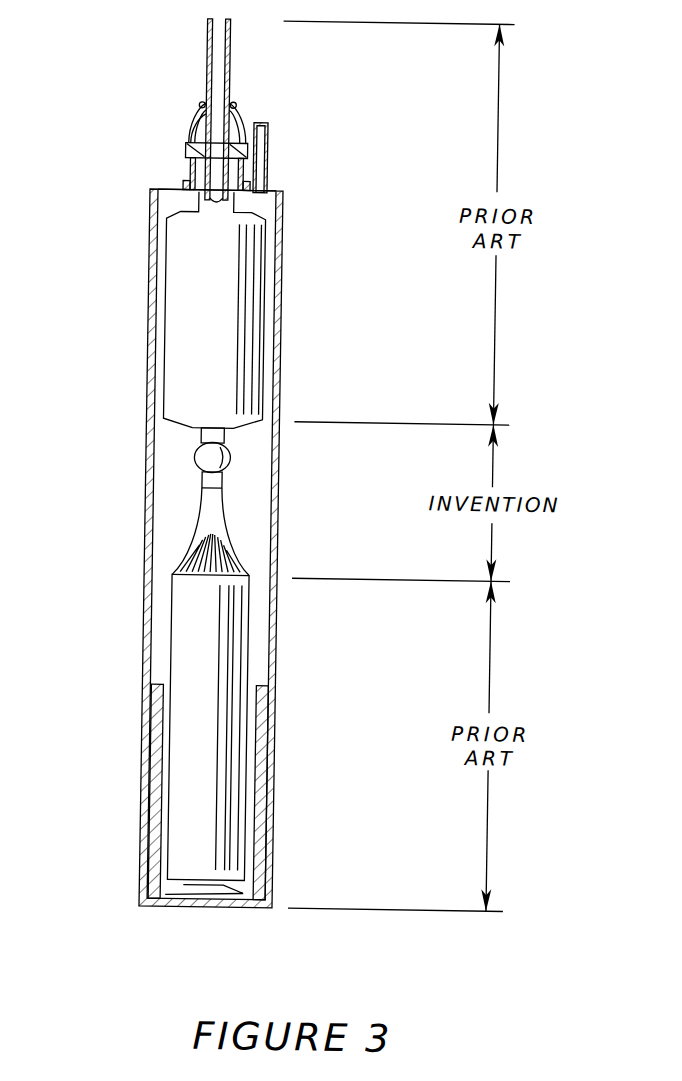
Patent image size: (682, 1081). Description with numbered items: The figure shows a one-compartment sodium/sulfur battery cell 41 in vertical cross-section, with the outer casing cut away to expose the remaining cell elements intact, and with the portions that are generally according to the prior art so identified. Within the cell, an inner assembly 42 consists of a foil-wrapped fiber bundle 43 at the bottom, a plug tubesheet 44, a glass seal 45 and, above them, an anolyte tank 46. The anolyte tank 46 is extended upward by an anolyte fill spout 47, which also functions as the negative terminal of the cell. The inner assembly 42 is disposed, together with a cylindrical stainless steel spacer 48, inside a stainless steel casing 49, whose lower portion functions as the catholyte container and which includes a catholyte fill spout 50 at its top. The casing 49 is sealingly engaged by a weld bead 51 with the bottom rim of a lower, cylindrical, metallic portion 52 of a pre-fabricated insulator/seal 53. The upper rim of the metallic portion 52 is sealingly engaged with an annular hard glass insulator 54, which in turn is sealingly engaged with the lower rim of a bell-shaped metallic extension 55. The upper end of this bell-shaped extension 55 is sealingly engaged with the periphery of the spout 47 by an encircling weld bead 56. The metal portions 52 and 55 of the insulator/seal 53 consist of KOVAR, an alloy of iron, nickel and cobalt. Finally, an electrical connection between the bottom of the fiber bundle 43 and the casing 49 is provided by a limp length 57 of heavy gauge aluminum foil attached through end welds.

The one-compartment cell 41 is at (308, 280).
The inner assembly 42 is at (241, 470).
The foil-wrapped fiber bundle 43 is at (189, 758).
The plug tubesheet 44 is at (206, 478).
The glass seal 45 is at (204, 443).
The anolyte tank 46 is at (189, 295).
The anolyte fill spout 47 is at (205, 45).
The cylindrical stainless steel spacer 48 is at (270, 711).
The stainless steel casing 49 is at (149, 591).
The pin 50 is at (267, 133).
The weld bead 51 is at (185, 186).
The lower cylindrical metallic portion 52 is at (193, 165).
The insulator/seal 53 is at (129, 101).
The annular hard glass insulator 54 is at (186, 147).
The bell-shaped metallic extension 55 is at (192, 130).
The encircling weld bead 56 is at (232, 107).
The limp length of heavy gauge aluminum foil 57 is at (241, 907).